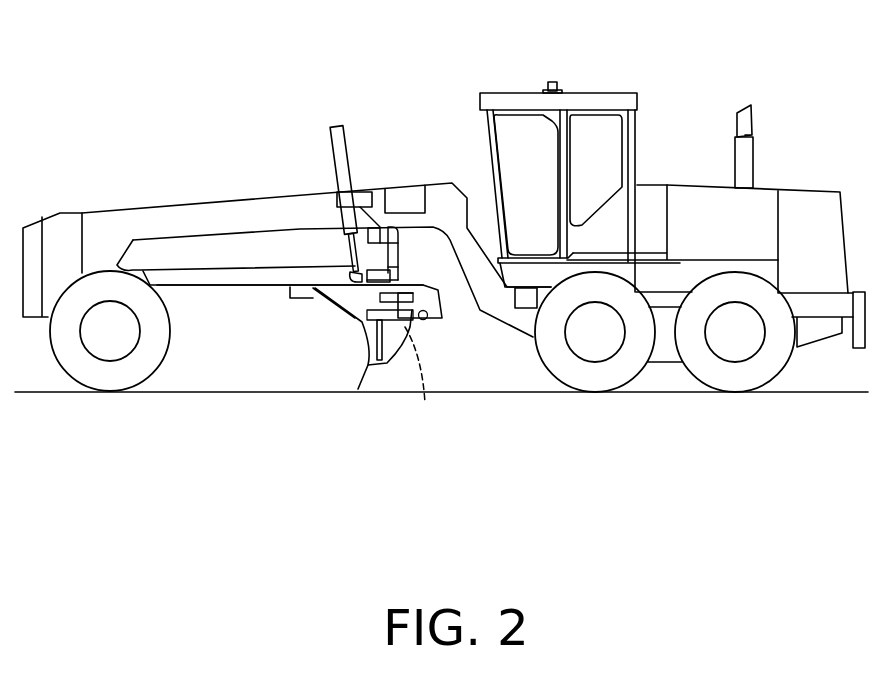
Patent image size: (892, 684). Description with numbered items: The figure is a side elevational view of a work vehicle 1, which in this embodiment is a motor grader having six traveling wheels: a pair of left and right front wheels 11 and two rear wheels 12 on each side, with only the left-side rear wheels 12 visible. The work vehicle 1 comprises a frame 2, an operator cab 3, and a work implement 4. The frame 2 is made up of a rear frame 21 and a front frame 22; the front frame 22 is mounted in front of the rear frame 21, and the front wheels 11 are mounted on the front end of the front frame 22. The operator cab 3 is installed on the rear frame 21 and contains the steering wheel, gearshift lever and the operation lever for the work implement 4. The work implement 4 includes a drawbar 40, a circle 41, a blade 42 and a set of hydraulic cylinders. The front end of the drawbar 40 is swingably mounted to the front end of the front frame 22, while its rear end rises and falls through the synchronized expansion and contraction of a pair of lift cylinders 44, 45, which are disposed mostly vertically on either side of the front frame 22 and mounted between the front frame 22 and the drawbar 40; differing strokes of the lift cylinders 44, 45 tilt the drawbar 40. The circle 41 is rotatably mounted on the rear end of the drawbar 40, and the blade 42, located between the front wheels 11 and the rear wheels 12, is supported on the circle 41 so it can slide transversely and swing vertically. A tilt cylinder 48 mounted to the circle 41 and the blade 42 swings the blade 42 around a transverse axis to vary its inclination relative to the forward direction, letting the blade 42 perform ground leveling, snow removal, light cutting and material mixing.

The work vehicle 1 is at (237, 73).
The frame 2 is at (438, 152).
The operator cab 3 is at (607, 95).
The work implement 4 is at (311, 377).
The front wheels 11 is at (103, 380).
The rear wheels 12 is at (592, 383).
The rear frame 21 is at (813, 330).
The front frame 22 is at (202, 215).
The drawbar 40 is at (202, 282).
The circle 41 is at (300, 297).
The blade 42 is at (367, 367).
The lift cylinder 44 is at (352, 140).
The lift cylinder 45 is at (355, 257).
The tilt cylinder 48 is at (425, 385).